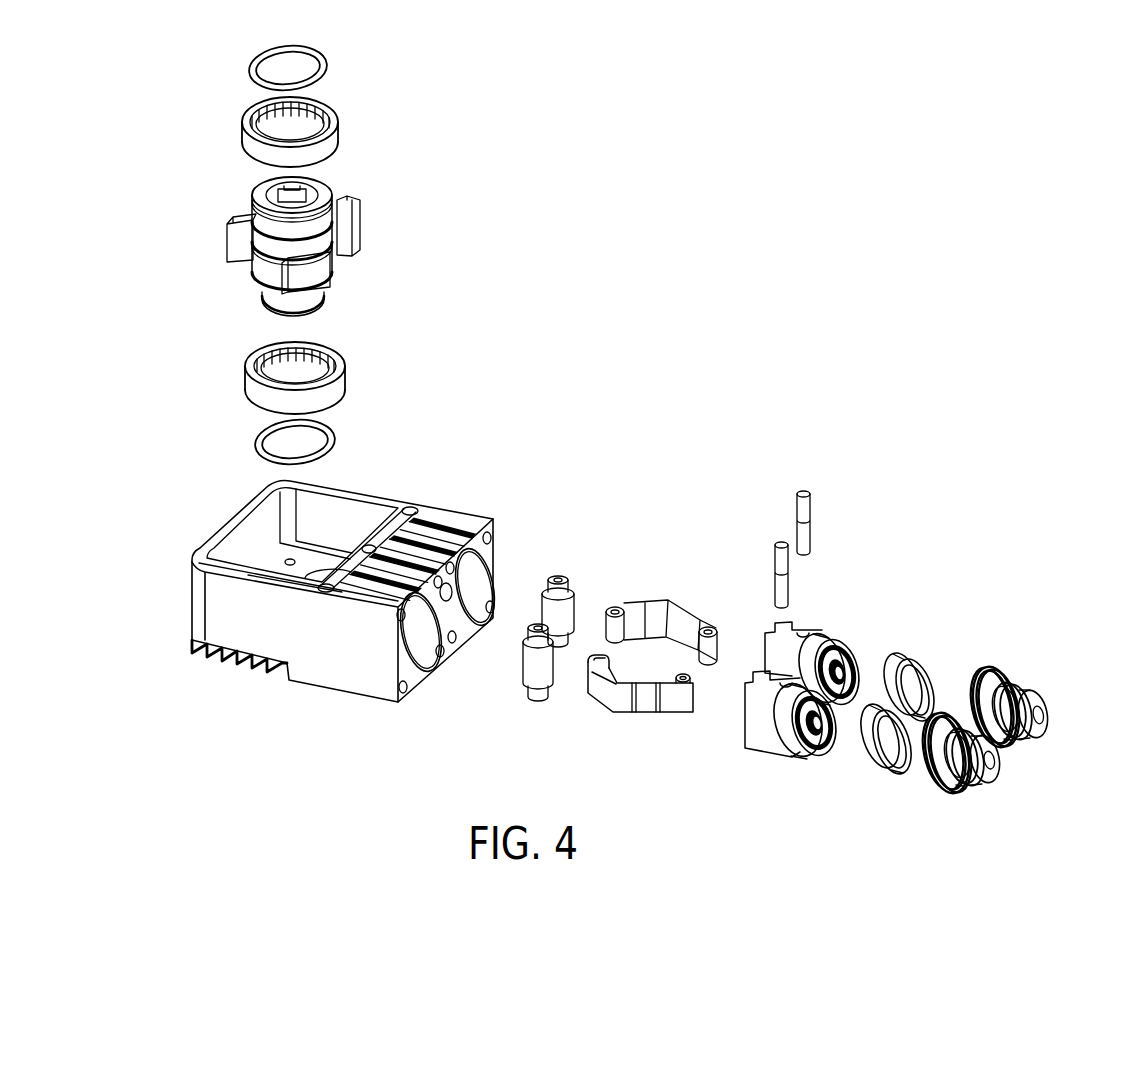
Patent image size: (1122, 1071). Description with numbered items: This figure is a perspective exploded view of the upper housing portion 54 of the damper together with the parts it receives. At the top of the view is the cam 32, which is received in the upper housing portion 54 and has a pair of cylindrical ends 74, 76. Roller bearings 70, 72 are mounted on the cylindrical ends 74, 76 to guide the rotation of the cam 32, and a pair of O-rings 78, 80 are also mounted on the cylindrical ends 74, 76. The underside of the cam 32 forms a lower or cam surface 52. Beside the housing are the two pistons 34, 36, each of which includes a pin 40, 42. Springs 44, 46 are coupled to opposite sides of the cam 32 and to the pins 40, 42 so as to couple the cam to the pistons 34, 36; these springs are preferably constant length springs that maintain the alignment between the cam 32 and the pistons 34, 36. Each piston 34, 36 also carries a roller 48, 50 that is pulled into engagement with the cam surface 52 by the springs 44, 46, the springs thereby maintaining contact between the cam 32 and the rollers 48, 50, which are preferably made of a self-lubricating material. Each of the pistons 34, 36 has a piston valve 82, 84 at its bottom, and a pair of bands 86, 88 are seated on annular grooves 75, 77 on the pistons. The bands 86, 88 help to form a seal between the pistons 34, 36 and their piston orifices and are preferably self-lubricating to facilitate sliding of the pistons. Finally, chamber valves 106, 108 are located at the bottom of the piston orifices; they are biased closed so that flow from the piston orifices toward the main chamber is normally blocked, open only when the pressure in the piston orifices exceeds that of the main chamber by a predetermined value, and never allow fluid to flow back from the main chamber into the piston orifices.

The O-ring 78 is at (322, 62).
The roller bearing 70 is at (242, 140).
The cylindrical end 74 is at (338, 206).
The cam surface 52 is at (354, 245).
The cam 32 is at (300, 278).
The cylindrical end 76 is at (318, 312).
The roller bearing 72 is at (250, 380).
The O-ring 80 is at (334, 440).
The upper housing portion 54 is at (326, 670).
The roller 50 is at (552, 610).
The roller 48 is at (528, 660).
The spring 46 is at (650, 598).
The spring 44 is at (604, 698).
The pin 42 is at (812, 516).
The pin 40 is at (776, 578).
The piston 36 is at (792, 626).
The piston valve 84 is at (850, 655).
The annular groove 77 is at (826, 645).
The piston 34 is at (760, 748).
The piston valve 82 is at (806, 760).
The annular groove 75 is at (786, 758).
The band 88 is at (918, 652).
The band 86 is at (882, 775).
The chamber valve 106 is at (1045, 736).
The chamber valve 108 is at (995, 782).